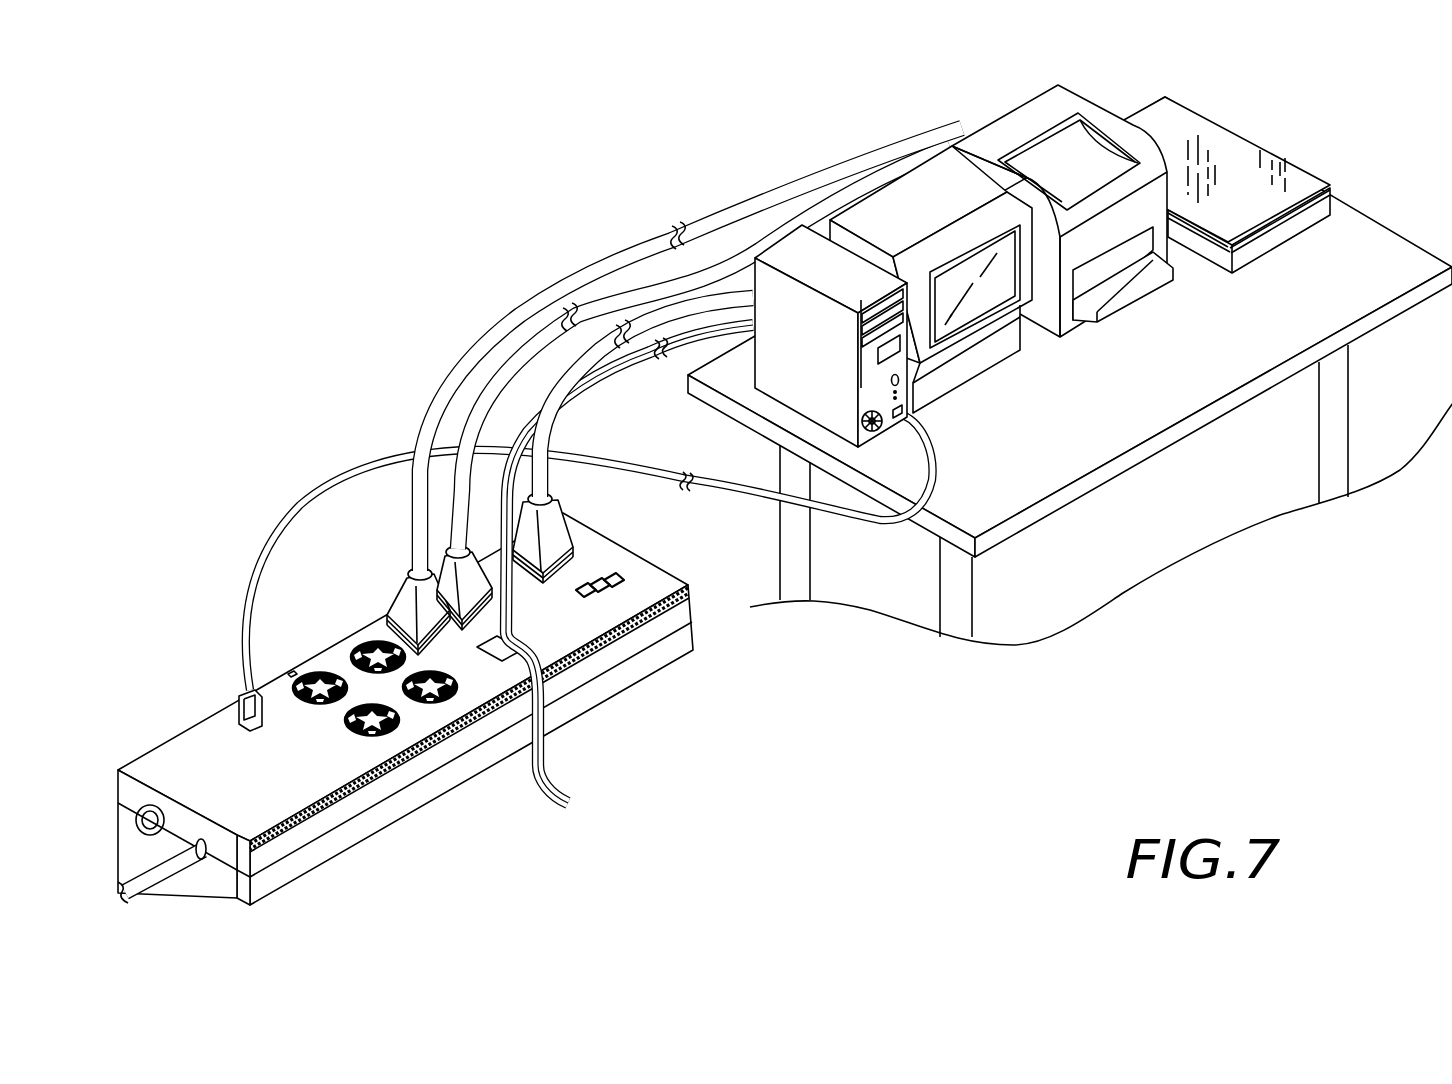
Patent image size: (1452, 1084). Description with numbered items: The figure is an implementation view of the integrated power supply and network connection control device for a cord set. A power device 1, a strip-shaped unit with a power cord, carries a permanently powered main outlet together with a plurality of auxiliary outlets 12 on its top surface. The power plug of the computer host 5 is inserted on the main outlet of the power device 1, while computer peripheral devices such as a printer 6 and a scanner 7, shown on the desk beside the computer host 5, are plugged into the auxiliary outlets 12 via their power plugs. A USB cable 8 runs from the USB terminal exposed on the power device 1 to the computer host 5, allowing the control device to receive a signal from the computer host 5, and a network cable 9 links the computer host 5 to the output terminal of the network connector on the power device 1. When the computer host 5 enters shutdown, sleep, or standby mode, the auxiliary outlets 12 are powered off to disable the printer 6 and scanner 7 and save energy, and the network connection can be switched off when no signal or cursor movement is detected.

The power device 1 is at (400, 709).
The computer host 5 is at (948, 325).
The printer 6 is at (1110, 287).
The scanner 7 is at (1240, 157).
The USB cable 8 is at (648, 475).
The network cable 9 is at (513, 612).
The auxiliary outlets 12 is at (317, 682).